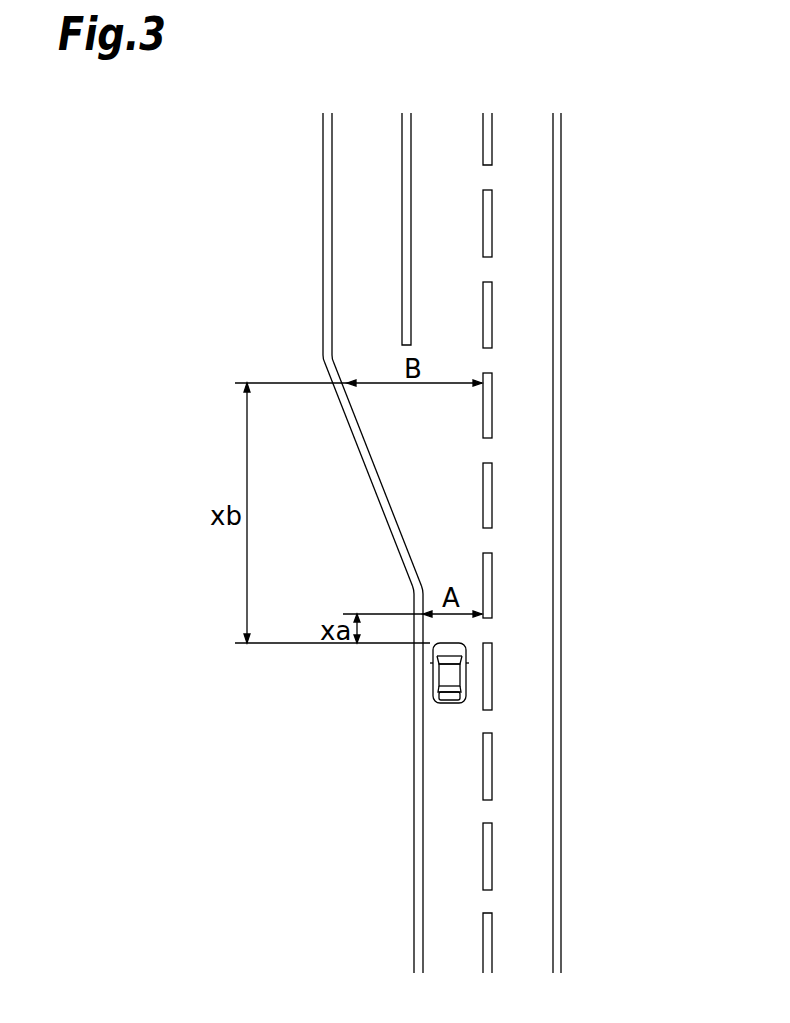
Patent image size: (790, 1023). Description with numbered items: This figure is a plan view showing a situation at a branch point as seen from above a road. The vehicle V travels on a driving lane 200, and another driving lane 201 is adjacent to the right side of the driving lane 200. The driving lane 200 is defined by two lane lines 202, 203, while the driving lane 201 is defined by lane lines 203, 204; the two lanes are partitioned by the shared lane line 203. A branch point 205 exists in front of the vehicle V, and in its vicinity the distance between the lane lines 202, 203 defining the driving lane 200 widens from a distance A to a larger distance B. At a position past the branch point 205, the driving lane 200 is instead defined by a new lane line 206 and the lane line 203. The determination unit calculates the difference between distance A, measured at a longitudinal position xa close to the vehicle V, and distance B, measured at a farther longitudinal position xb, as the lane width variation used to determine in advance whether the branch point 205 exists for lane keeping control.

The driving lane 200 is at (447, 880).
The driving lane 201 is at (532, 890).
The lane line 202 is at (414, 793).
The lane line 203 is at (493, 775).
The lane line 204 is at (563, 720).
The branch point 205 is at (392, 448).
The new lane line 206 is at (402, 228).
The vehicle V is at (433, 686).